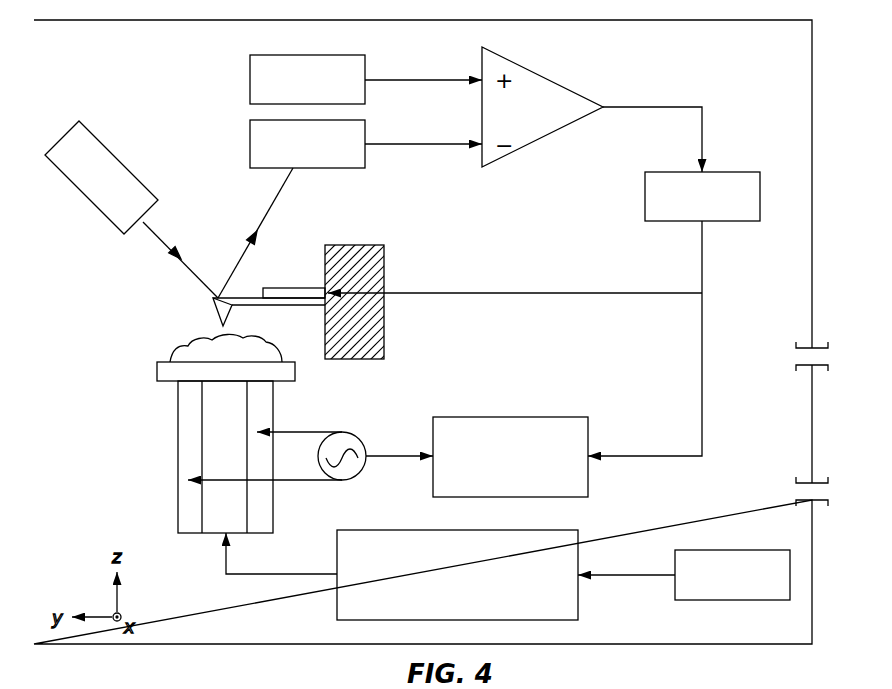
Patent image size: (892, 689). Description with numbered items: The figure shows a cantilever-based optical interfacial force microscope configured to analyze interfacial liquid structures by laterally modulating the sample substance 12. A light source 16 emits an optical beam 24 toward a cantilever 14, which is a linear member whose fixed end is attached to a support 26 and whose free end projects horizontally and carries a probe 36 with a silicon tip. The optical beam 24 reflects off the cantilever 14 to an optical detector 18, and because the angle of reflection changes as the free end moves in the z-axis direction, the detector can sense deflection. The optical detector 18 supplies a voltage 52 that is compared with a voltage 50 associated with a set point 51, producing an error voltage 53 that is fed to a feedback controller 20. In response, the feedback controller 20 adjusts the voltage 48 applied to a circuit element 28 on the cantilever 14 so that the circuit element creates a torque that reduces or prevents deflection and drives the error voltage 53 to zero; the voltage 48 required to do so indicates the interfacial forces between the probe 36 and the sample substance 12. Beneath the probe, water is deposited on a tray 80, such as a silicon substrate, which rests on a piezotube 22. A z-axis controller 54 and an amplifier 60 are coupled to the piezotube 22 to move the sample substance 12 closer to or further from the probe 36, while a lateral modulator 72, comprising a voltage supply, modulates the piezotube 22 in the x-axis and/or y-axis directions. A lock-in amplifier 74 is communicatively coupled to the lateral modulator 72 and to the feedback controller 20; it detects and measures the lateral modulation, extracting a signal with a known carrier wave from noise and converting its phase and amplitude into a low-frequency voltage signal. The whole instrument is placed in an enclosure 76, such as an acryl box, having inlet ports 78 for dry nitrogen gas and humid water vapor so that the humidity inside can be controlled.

The sample substance 12 is at (173, 354).
The cantilever 14 is at (252, 296).
The light source 16 is at (101, 177).
The optical detector 18 is at (307, 144).
The feedback controller 20 is at (702, 196).
The piezotube 22 is at (178, 490).
The optical beam 24 is at (156, 226).
The support 26 is at (374, 246).
The circuit element 28 is at (290, 288).
The probe 36 is at (215, 316).
The voltage 48 is at (524, 293).
The voltage 50 is at (404, 80).
The set point 51 is at (307, 79).
The voltage 52 is at (404, 144).
The error voltage 53 is at (654, 107).
The z-axis controller 54 is at (684, 575).
The amplifier 60 is at (402, 575).
The lateral modulator 72 is at (354, 432).
The lock-in amplifier 74 is at (510, 457).
The enclosure 76 is at (735, 20).
The inlet port 78 is at (801, 342).
The tray 80 is at (157, 380).